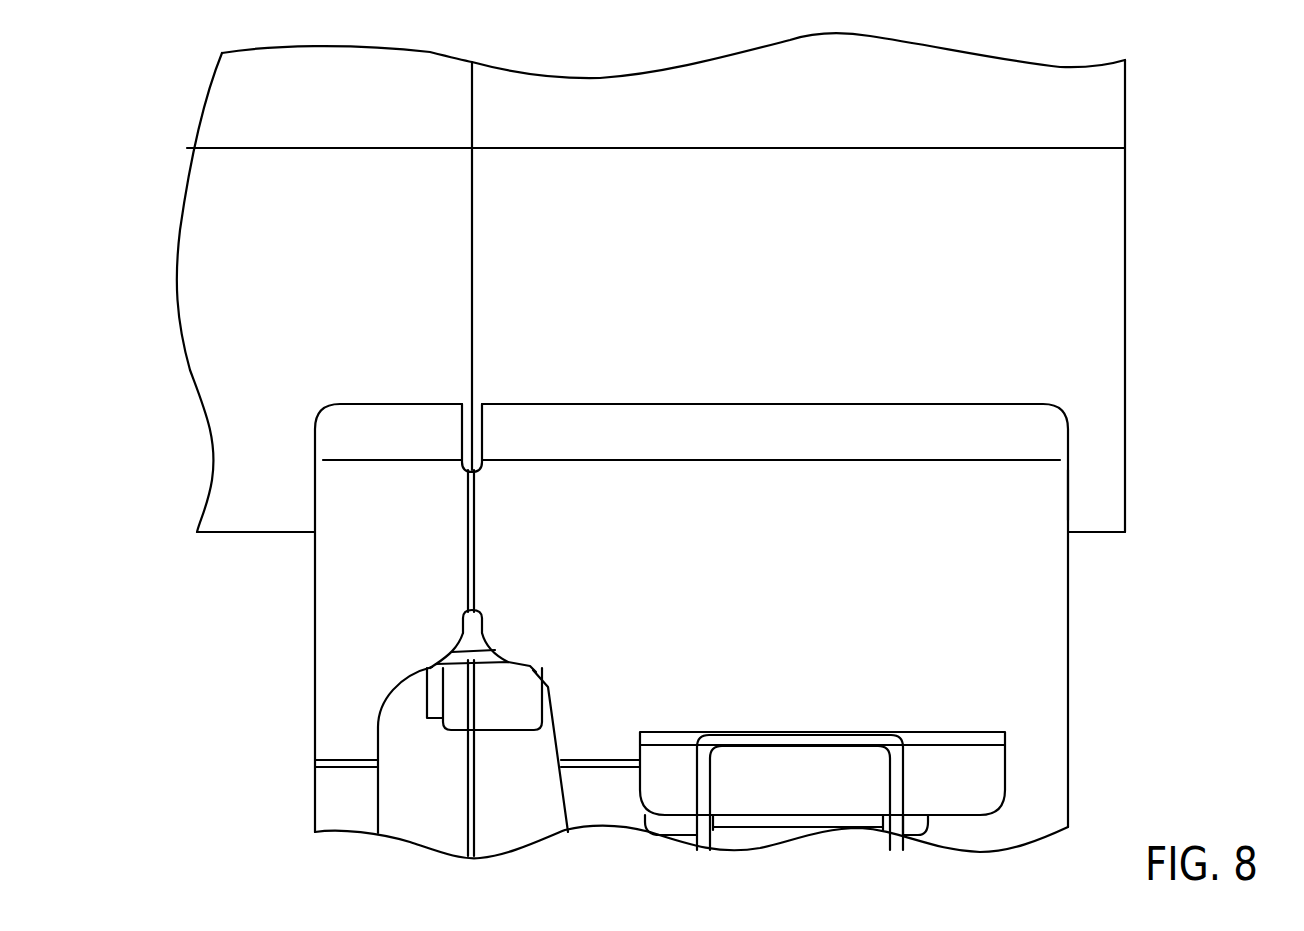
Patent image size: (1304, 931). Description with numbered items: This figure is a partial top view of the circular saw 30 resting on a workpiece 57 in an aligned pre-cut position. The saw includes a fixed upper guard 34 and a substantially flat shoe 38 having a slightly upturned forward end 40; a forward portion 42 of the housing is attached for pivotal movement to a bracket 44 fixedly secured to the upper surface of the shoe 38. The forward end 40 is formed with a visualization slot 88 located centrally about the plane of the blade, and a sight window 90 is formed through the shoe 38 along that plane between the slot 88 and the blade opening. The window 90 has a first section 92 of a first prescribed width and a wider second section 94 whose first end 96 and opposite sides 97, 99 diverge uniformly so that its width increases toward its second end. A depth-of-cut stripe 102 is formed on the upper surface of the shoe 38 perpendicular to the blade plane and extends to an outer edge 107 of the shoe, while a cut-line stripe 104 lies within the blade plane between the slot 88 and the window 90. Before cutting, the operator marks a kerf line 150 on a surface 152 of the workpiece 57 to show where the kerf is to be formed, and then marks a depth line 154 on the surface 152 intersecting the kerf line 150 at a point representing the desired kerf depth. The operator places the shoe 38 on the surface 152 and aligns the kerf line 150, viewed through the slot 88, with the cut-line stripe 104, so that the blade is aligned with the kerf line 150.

The circular saw 30 is at (738, 608).
The fixed upper guard 34 is at (375, 797).
The shoe 38 is at (1073, 493).
The forward end 40 is at (1027, 418).
The forward portion 42 is at (822, 828).
The bracket 44 is at (868, 728).
The workpiece 57 is at (1122, 256).
The visualization slot 88 is at (465, 415).
The sight window 90 is at (470, 611).
The first section 92 is at (480, 624).
The second section 94 is at (480, 650).
The first end 96 is at (490, 640).
The opposite side 97 is at (462, 640).
The opposite side 99 is at (507, 658).
The depth-of-cut stripe 102 is at (352, 757).
The cut-line stripe 104 is at (465, 563).
The outer edge 107 is at (312, 815).
The kerf line 150 is at (472, 256).
The surface 152 is at (1102, 103).
The depth line 154 is at (758, 149).